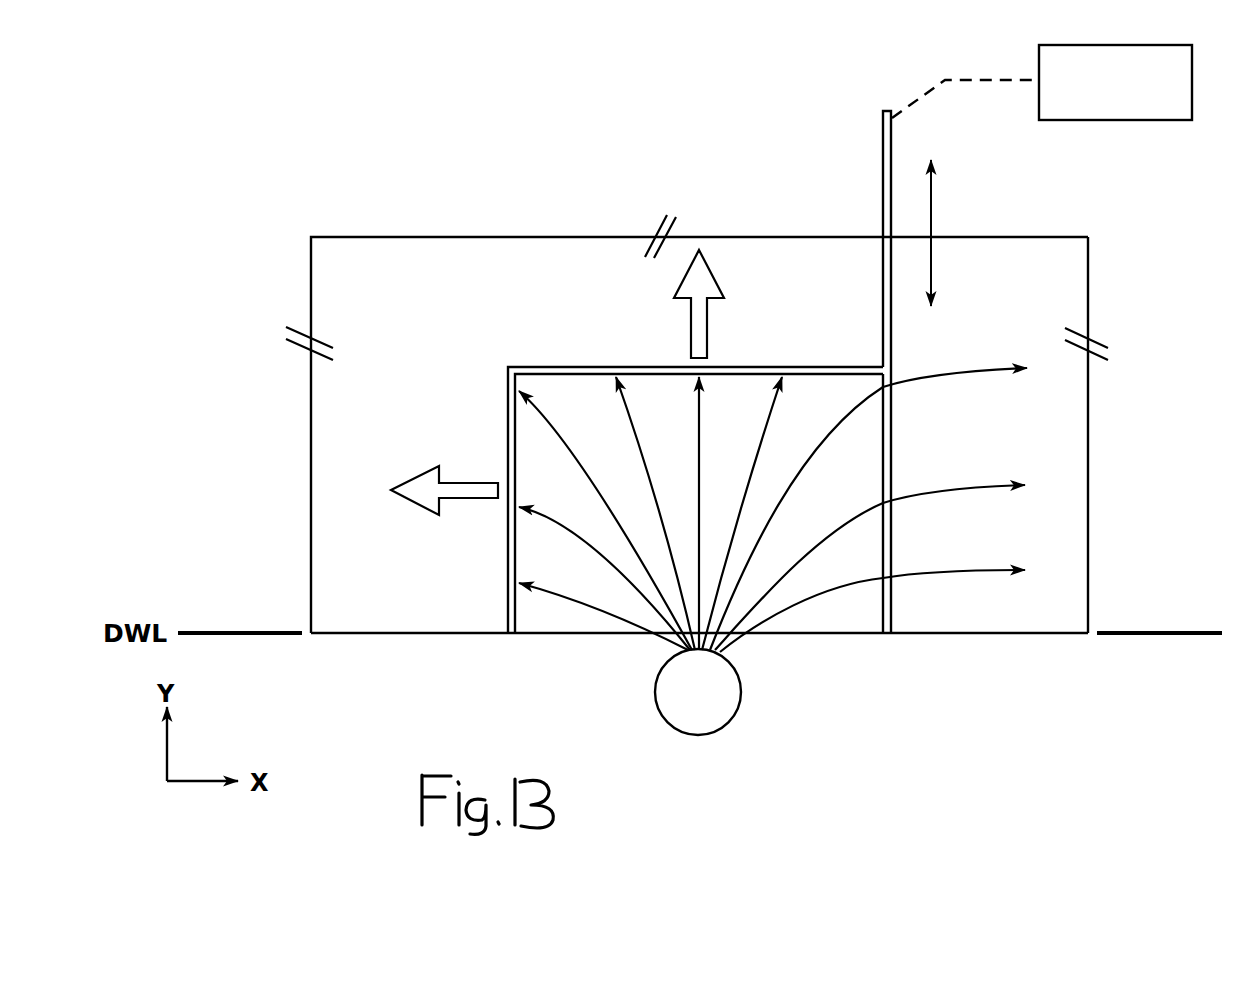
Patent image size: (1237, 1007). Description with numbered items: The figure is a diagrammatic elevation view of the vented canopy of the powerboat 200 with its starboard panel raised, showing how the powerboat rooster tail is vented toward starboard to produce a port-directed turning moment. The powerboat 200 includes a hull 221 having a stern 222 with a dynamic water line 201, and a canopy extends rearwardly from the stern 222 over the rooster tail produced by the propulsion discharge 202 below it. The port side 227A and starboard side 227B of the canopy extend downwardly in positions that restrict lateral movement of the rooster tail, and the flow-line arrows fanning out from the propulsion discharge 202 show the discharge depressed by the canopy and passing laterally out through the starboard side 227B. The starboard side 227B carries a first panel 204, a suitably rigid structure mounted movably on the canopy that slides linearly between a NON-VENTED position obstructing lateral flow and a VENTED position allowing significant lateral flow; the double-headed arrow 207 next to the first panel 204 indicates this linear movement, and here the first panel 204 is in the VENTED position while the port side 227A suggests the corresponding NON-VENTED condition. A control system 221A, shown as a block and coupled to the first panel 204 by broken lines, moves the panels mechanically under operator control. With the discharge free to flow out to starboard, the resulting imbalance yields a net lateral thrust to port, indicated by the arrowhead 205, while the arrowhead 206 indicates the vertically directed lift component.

The powerboat 200 is at (291, 187).
The dynamic water line 201 is at (1145, 636).
The propulsion discharge 202 is at (731, 724).
The first panel 204 is at (881, 137).
The arrowhead 205 is at (420, 495).
The arrowhead 206 is at (702, 275).
The double-headed arrow 207 is at (931, 205).
The hull 221 is at (309, 405).
The control system 221A is at (1142, 122).
The stern 222 is at (1072, 253).
The port side 227A is at (507, 620).
The starboard side 227B is at (893, 620).